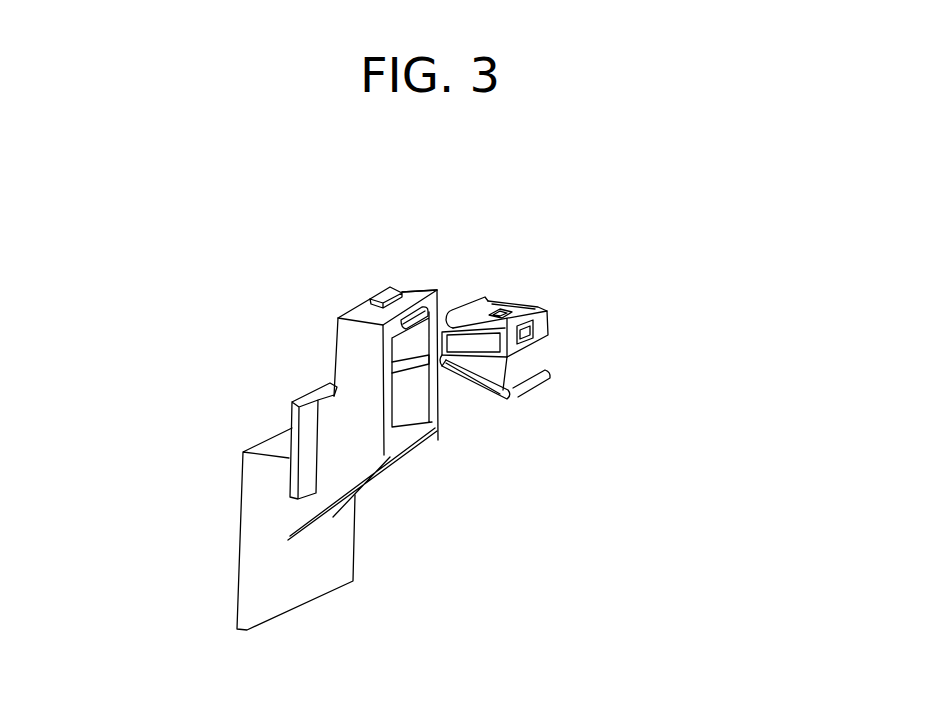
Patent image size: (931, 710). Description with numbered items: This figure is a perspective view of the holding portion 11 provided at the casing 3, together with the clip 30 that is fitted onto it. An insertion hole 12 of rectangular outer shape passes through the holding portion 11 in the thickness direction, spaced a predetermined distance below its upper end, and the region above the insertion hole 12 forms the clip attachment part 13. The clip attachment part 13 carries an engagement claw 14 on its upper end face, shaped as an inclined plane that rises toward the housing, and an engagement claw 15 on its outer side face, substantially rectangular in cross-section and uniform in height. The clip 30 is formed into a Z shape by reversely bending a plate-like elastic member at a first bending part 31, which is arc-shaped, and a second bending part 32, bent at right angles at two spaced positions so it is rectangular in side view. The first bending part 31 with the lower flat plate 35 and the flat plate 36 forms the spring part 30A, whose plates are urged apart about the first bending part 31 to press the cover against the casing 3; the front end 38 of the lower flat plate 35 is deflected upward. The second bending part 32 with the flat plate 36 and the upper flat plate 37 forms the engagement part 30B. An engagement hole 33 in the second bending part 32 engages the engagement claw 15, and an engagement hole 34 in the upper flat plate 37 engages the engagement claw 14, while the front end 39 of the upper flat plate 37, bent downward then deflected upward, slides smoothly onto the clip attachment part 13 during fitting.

The casing 3 is at (342, 558).
The holding portion 11 is at (320, 357).
The insertion hole 12 is at (403, 383).
The clip attachment part 13 is at (414, 289).
The engagement claw 14 is at (383, 296).
The engagement claw 15 is at (431, 303).
The clip 30 is at (548, 344).
The spring part 30A is at (475, 373).
The engagement part 30B is at (532, 286).
The first bending part 31 is at (452, 367).
The second bending part 32 is at (549, 328).
The engagement hole 33 is at (533, 336).
The engagement hole 34 is at (502, 313).
The lower flat plate 35 is at (492, 383).
The flat plate 36 is at (495, 373).
The upper flat plate 37 is at (530, 306).
The front end 38 is at (545, 376).
The front end 39 is at (466, 306).